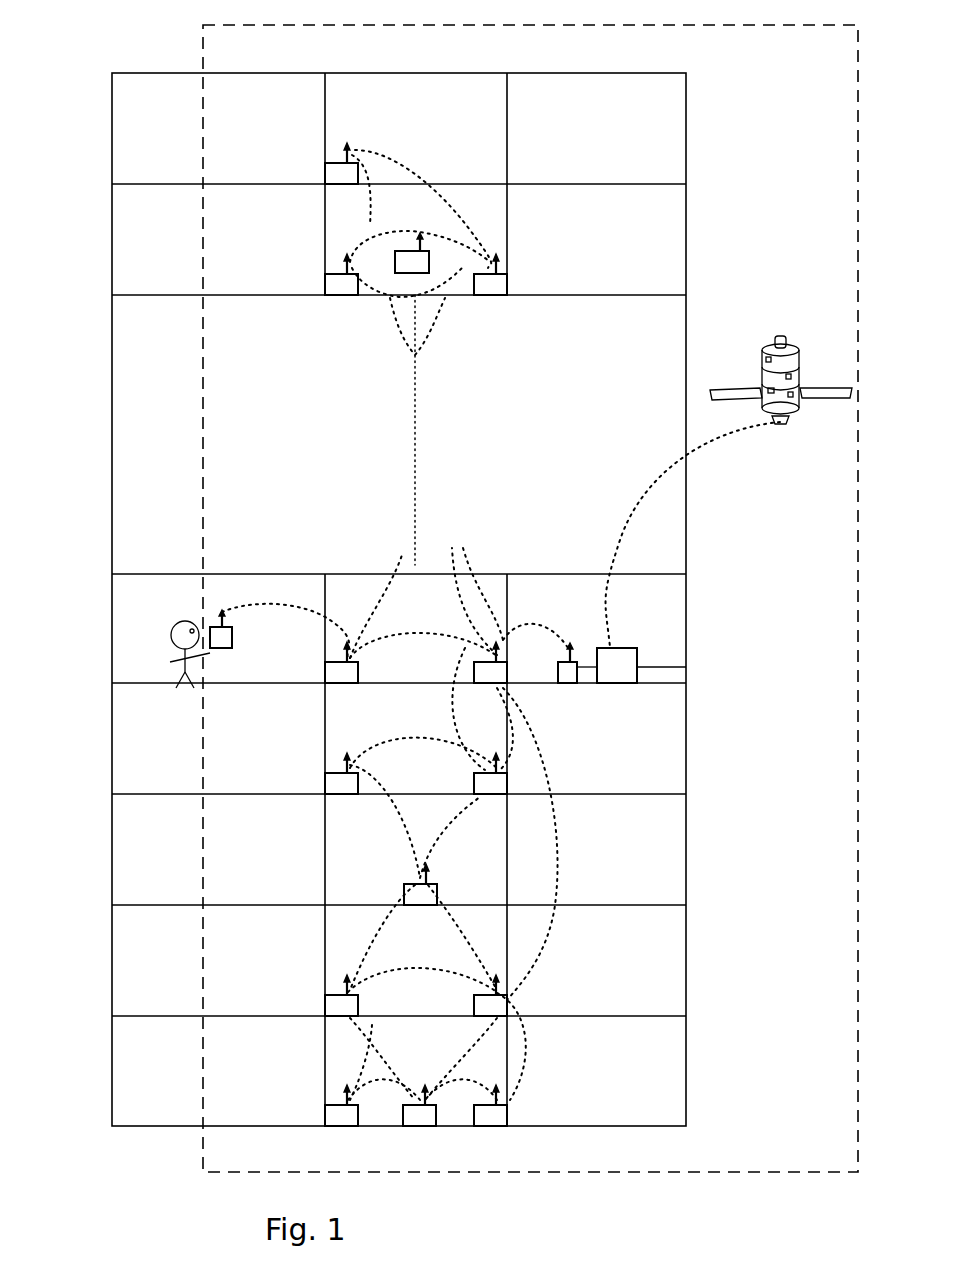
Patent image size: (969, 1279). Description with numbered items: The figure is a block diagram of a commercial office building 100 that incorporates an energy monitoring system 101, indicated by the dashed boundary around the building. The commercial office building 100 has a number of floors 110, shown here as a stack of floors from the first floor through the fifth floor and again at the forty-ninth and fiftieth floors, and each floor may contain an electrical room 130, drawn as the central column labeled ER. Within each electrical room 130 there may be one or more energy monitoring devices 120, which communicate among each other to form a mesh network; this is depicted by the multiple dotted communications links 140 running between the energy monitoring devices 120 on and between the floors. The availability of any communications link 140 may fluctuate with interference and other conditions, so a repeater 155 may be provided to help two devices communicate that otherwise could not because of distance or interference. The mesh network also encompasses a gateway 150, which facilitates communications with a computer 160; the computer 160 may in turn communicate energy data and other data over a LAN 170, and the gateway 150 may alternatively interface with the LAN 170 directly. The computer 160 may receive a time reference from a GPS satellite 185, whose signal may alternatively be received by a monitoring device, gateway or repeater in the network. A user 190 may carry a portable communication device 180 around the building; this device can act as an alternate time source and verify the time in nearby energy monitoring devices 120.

The commercial office building 100 is at (138, 72).
The energy monitoring system 101 is at (528, 587).
The floors 110 is at (452, 587).
The energy monitoring devices 120 is at (387, 659).
The electrical room 130 is at (465, 583).
The communications links 140 is at (400, 167).
The gateway 150 is at (578, 686).
The repeaters 155 is at (433, 262).
The computer 160 is at (612, 648).
The LAN 170 is at (663, 666).
The portable communication device 180 is at (218, 622).
The GPS satellite 185 is at (800, 418).
The user 190 is at (180, 666).